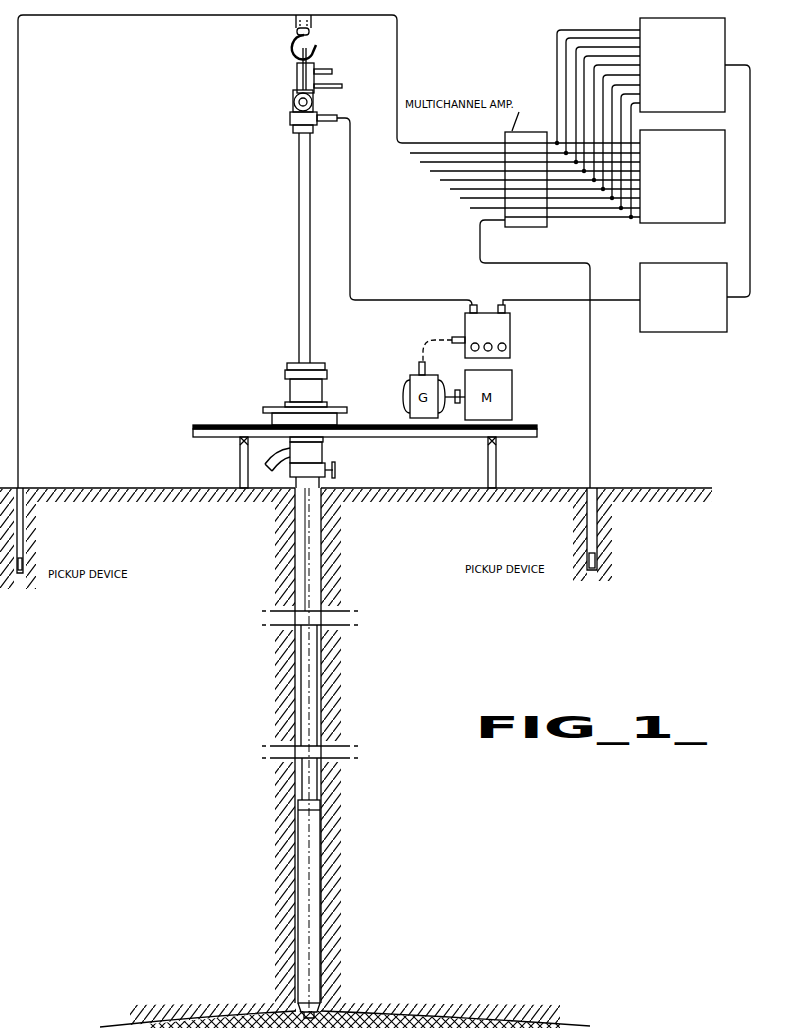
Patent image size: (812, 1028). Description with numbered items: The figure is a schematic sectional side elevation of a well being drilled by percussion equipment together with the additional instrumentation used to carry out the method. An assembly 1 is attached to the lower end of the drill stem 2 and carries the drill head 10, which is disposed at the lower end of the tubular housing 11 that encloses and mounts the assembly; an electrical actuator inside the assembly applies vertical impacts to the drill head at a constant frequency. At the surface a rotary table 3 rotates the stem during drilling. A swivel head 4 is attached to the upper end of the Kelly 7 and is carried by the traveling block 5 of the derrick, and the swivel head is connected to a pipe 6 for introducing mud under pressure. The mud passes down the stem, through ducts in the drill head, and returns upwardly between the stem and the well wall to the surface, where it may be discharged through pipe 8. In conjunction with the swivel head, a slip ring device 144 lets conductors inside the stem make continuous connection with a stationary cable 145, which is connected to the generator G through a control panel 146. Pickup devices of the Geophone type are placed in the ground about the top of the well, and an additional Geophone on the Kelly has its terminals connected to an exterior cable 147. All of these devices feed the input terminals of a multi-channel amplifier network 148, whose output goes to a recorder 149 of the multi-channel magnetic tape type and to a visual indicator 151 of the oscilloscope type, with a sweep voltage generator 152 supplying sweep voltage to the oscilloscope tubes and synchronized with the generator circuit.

The assembly 1 is at (315, 888).
The drill stem 2 is at (312, 702).
The rotary table 3 is at (263, 409).
The swivel head 4 is at (293, 104).
The traveling block 5 is at (292, 37).
The pipe 6 is at (322, 68).
The Kelly 7 is at (299, 318).
The pipe 8 is at (276, 457).
The drill head 10 is at (340, 1007).
The tubular housing 11 is at (318, 948).
The slip ring device 144 is at (293, 125).
The stationary cable 145 is at (330, 115).
The control panel 146 is at (511, 338).
The exterior cable 147 is at (333, 84).
The multi-channel amplifier network 148 is at (517, 229).
The recorder 149 is at (651, 224).
The visual indicator 151 is at (725, 35).
The sweep voltage generator 152 is at (685, 333).